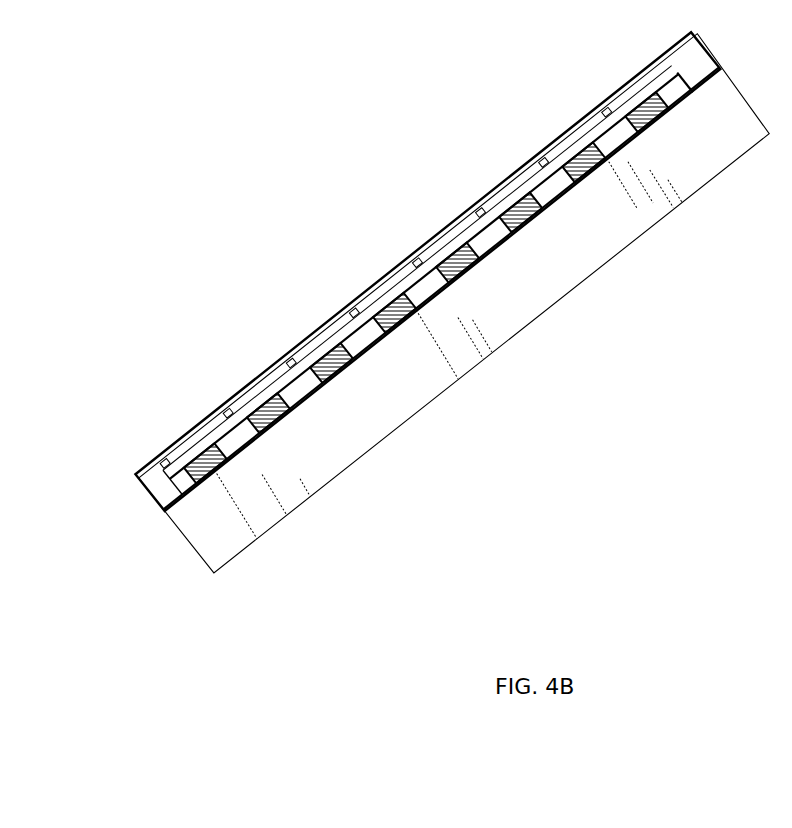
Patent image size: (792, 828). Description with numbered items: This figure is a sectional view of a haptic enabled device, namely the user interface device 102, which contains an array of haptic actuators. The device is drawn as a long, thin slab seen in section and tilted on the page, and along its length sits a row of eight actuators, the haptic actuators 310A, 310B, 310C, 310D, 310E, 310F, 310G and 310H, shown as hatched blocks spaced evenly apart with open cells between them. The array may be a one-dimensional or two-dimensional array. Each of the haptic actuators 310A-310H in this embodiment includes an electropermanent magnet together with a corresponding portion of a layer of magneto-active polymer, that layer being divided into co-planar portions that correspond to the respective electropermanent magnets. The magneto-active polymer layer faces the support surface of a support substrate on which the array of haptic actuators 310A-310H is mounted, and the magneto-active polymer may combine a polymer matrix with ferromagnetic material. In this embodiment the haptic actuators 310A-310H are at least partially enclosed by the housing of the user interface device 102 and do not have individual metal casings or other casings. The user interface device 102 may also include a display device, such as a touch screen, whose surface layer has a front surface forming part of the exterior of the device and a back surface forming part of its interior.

The user interface device 102 is at (166, 378).
The haptic actuator 310A is at (670, 137).
The haptic actuator 310B is at (601, 192).
The haptic actuator 310C is at (540, 240).
The haptic actuator 310D is at (477, 290).
The haptic actuator 310E is at (413, 341).
The haptic actuator 310F is at (347, 394).
The haptic actuator 310G is at (282, 445).
The haptic actuator 310H is at (212, 500).